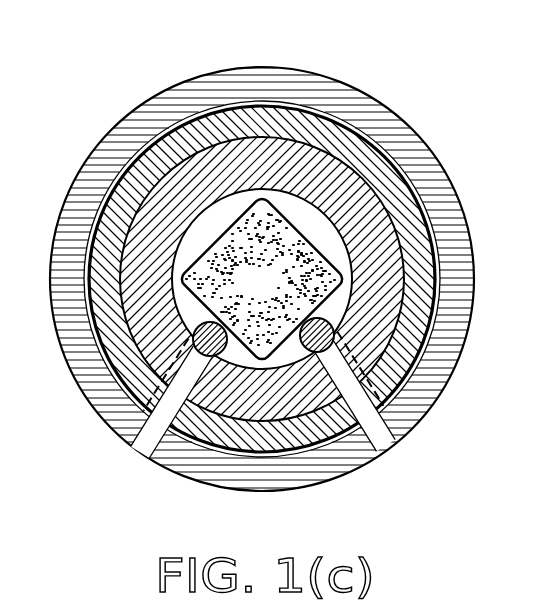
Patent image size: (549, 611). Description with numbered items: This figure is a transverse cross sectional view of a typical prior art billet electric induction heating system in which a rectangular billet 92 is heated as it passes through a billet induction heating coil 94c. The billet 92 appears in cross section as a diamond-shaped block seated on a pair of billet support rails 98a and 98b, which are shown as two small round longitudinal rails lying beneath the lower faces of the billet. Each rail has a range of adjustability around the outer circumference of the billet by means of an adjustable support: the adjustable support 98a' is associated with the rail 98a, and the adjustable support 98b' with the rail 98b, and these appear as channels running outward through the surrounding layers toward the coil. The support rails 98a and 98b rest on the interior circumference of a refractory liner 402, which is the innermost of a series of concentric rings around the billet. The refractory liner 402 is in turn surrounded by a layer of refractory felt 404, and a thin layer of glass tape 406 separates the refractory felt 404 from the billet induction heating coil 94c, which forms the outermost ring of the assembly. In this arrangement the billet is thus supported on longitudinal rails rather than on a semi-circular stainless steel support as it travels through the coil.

The billet induction heating coil 94c is at (415, 158).
The glass tape 406 is at (338, 117).
The refractory felt 404 is at (287, 118).
The refractory liner 402 is at (215, 167).
The rectangular billet 92 is at (236, 292).
The billet support rail 98a is at (126, 390).
The adjustable support 98a' is at (131, 413).
The billet support rail 98b is at (419, 384).
The adjustable support 98b' is at (413, 409).